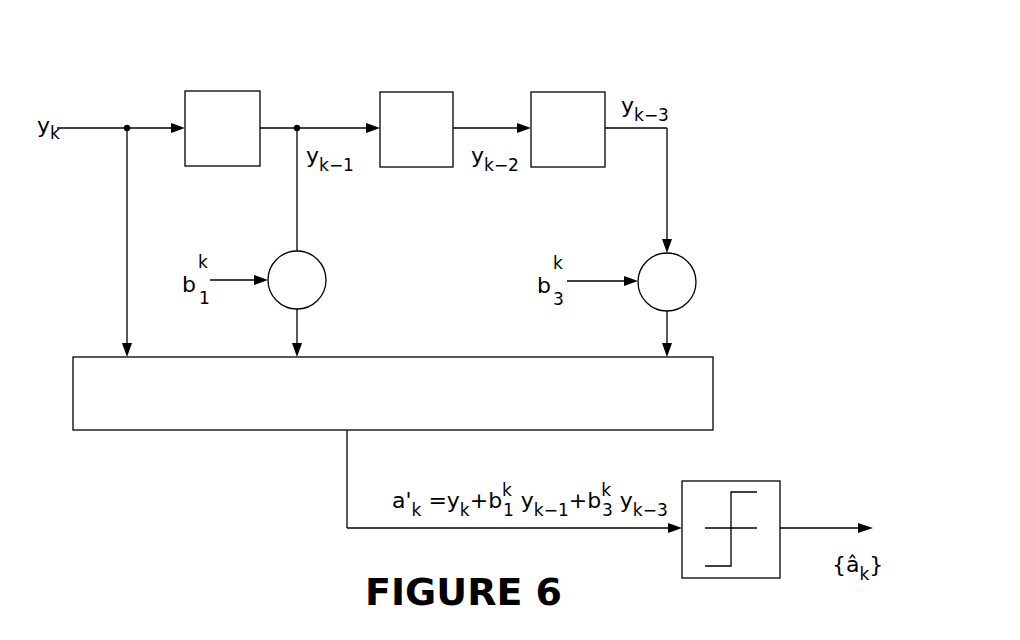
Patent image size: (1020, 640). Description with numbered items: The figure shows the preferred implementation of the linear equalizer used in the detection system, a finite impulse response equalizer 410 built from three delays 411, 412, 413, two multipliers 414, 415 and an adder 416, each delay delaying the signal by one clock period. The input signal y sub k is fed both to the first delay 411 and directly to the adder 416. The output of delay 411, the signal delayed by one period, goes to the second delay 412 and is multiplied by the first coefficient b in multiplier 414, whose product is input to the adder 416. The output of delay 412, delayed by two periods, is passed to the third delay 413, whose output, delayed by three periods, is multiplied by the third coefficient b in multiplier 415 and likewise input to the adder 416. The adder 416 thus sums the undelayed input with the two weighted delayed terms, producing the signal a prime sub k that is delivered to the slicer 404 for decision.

The slicer 404 is at (781, 487).
The equalizer 410 is at (506, 68).
The delay 411 is at (245, 91).
The delay 412 is at (430, 92).
The delay 413 is at (587, 92).
The multiplier 414 is at (325, 290).
The multiplier 415 is at (694, 294).
The adder 416 is at (240, 430).